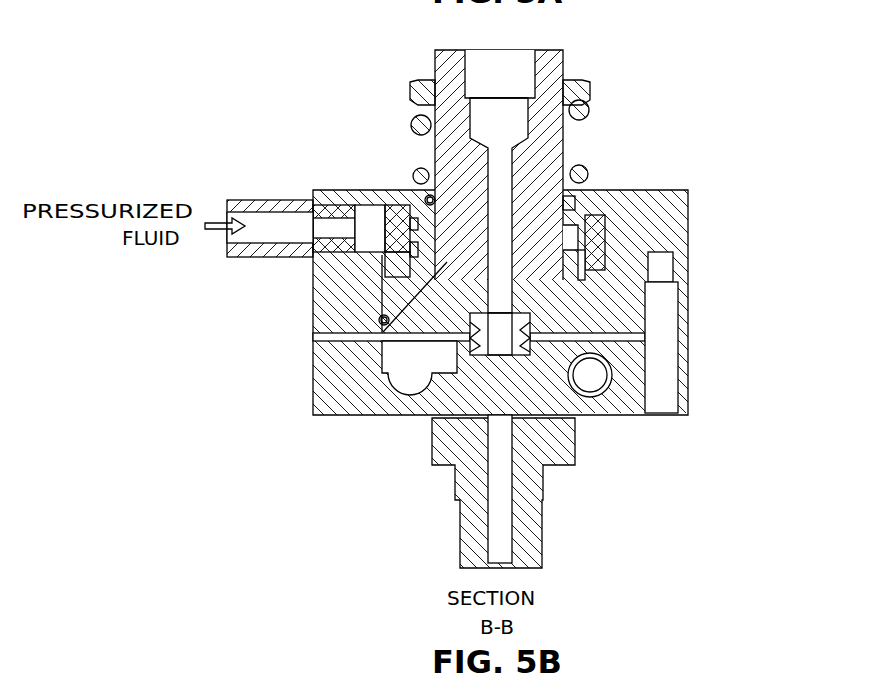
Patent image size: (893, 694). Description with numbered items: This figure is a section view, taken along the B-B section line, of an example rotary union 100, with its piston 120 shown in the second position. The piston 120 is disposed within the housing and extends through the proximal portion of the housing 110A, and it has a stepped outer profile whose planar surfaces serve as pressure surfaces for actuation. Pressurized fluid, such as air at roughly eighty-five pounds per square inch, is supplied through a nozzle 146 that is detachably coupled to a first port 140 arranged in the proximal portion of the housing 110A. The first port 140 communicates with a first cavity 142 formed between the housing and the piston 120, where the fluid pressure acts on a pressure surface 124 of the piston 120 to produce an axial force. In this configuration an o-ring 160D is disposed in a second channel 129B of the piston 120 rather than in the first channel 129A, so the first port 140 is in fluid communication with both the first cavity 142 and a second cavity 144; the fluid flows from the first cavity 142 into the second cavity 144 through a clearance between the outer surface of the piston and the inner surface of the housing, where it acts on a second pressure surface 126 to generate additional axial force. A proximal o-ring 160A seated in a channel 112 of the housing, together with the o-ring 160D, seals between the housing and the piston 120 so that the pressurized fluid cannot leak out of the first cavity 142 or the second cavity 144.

The rotary union 100 is at (606, 32).
The proximal portion of the housing 110A is at (663, 188).
The channel of the housing 112 is at (428, 194).
The proximal o-ring 160A is at (430, 200).
The piston 120 is at (566, 135).
The pressure surface 124 is at (573, 239).
The second pressure surface 126 is at (593, 278).
The first channel of the piston 129A is at (408, 254).
The second channel of the piston 129B is at (376, 321).
The o-ring 160D is at (384, 320).
The first port 140 is at (375, 230).
The first cavity 142 is at (418, 228).
The second cavity 144 is at (397, 270).
The nozzle 146 is at (275, 192).